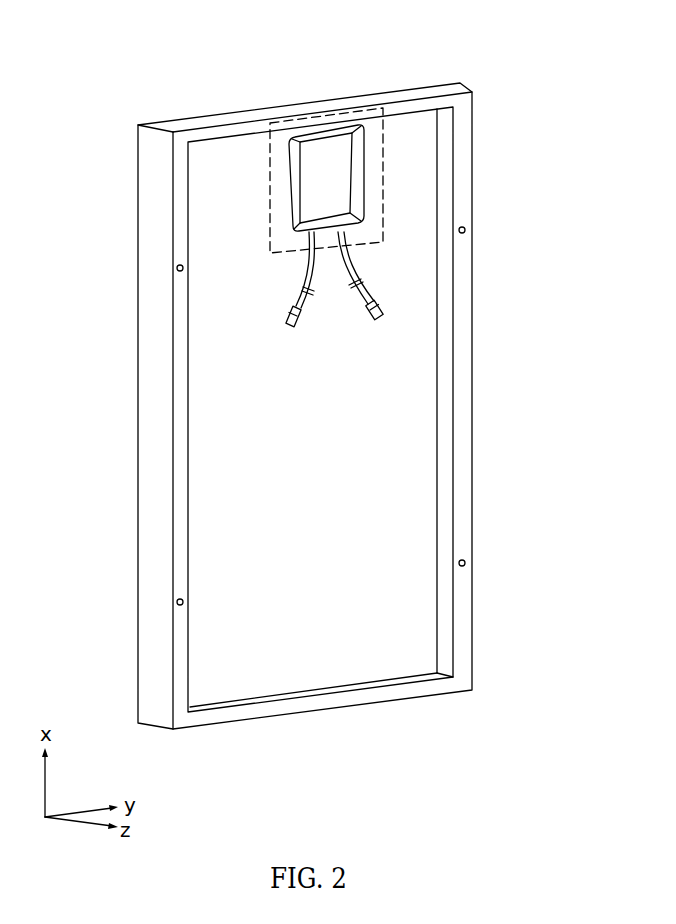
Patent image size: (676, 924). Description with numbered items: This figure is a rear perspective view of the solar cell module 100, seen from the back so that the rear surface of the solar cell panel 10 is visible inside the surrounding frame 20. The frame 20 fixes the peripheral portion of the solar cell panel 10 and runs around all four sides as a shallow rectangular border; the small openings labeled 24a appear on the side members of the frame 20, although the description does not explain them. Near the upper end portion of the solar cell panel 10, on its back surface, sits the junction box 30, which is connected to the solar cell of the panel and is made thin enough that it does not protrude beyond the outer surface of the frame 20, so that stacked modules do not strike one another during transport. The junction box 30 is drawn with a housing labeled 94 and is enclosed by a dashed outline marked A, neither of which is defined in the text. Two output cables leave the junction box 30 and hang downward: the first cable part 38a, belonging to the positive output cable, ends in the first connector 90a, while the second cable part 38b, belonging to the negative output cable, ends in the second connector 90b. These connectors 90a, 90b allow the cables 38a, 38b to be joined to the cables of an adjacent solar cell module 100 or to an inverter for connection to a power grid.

The solar cell module 100 is at (109, 66).
The solar cell panel 10 is at (344, 438).
The frame 20 is at (412, 77).
The fastening hole 24a is at (177, 602).
The junction box 30 is at (341, 183).
The module housing 94 is at (409, 133).
The first cable part 38a is at (186, 302).
The second cable part 38b is at (459, 265).
The first connector 90a is at (294, 326).
The second connector 90b is at (381, 304).
The region A is at (288, 122).